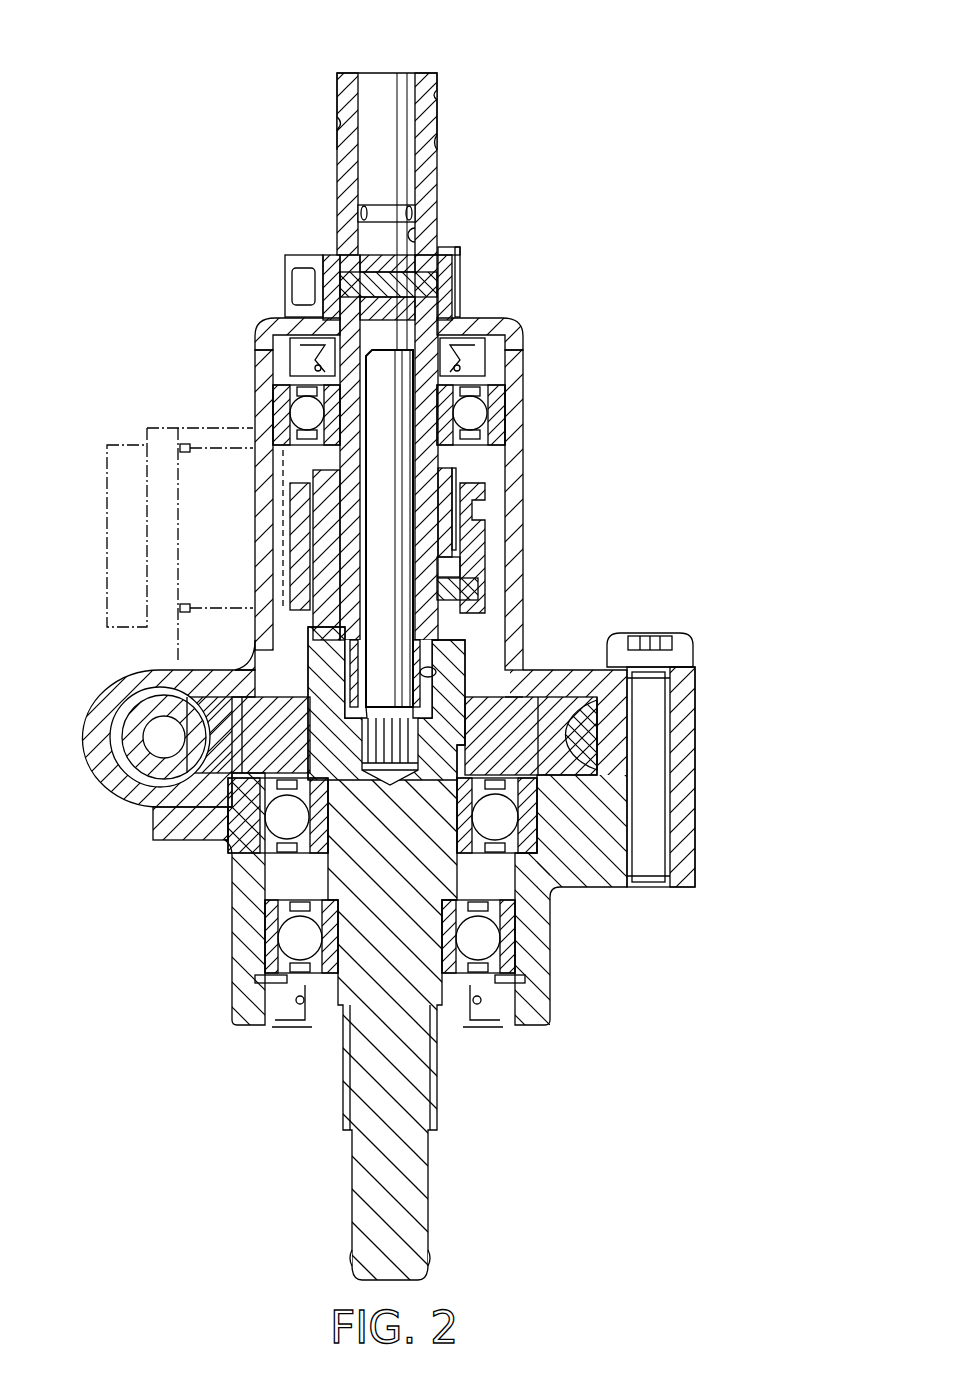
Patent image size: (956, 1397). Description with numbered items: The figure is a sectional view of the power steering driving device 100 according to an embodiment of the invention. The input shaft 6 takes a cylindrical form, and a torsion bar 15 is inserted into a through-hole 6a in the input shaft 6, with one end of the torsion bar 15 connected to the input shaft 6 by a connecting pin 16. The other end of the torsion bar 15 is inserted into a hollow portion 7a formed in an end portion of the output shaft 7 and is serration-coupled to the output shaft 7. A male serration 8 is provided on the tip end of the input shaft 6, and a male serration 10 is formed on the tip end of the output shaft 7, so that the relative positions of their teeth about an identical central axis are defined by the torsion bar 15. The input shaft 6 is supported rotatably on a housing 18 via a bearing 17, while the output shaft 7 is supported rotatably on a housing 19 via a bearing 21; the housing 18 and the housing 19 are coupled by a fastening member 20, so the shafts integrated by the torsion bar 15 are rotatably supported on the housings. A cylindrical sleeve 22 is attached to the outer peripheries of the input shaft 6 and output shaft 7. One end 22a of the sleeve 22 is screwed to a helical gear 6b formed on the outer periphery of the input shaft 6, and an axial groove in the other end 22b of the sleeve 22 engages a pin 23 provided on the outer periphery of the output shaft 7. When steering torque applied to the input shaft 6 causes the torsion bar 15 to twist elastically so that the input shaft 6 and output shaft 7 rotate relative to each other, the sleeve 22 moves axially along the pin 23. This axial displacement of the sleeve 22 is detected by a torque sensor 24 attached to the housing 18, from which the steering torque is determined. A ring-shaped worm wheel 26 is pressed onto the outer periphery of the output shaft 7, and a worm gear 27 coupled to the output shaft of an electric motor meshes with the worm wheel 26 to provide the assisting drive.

The steering apparatus assembly 100 is at (541, 85).
The input shaft 6 is at (437, 155).
The through-hole 6a is at (420, 242).
The helical gear 6b is at (455, 470).
The output shaft 7 is at (434, 949).
The hollow portion 7a is at (428, 675).
The male serration 8 is at (337, 95).
The male serration 10 is at (437, 1075).
The torsion bar 15 is at (400, 455).
The connecting pin 16 is at (445, 285).
The bearing 17 is at (495, 395).
The housing 18 is at (283, 365).
The housing 19 is at (613, 872).
The fastening member 20 is at (682, 652).
The bearing 21 is at (245, 855).
The cylindrical sleeve 22 is at (439, 545).
The one end of the sleeve 22a is at (490, 492).
The another end of the sleeve 22b is at (486, 565).
The pin 23 is at (481, 588).
The torque sensor 24 is at (123, 457).
The worm wheel 26 is at (527, 739).
The worm gear 27 is at (130, 745).